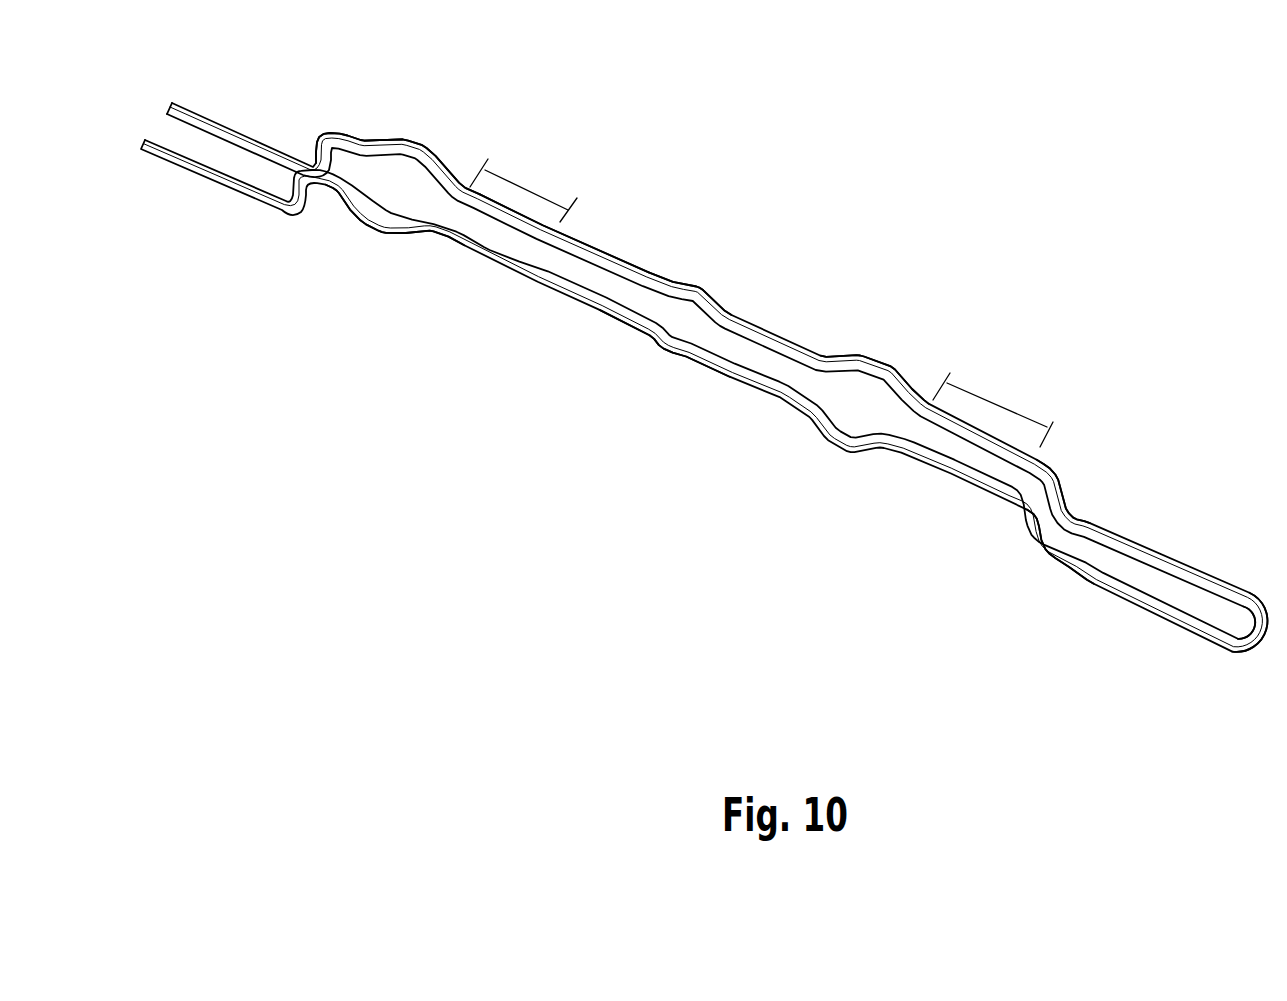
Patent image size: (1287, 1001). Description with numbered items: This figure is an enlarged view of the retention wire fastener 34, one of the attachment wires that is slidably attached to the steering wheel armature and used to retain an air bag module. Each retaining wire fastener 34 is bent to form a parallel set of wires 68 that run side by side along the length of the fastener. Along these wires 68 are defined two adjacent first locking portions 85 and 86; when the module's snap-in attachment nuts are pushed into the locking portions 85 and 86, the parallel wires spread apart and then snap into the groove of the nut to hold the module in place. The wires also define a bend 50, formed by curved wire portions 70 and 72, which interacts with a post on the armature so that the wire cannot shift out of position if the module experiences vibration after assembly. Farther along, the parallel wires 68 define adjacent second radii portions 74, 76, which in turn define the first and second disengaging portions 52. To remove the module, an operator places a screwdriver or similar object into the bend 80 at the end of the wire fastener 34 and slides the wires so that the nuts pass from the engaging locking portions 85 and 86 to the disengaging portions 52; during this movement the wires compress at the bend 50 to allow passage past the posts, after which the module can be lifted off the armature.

The retaining wire fastener 34 is at (1058, 467).
The bend 50 is at (694, 322).
The disengaging portion 52 is at (380, 194).
The parallel set of wires 68 is at (621, 259).
The curved wire portion 70 is at (698, 307).
The curved wire portion 72 is at (657, 347).
The second radii portion 74 is at (428, 147).
The second radii portion 76 is at (371, 238).
The bend 80 is at (1237, 617).
The first locking portion 85 is at (990, 400).
The first locking portion 86 is at (514, 182).